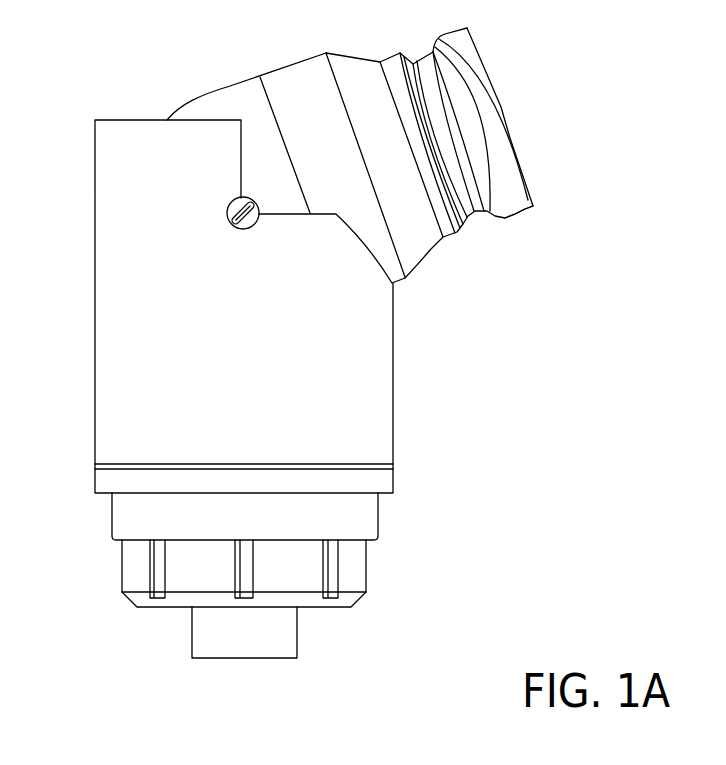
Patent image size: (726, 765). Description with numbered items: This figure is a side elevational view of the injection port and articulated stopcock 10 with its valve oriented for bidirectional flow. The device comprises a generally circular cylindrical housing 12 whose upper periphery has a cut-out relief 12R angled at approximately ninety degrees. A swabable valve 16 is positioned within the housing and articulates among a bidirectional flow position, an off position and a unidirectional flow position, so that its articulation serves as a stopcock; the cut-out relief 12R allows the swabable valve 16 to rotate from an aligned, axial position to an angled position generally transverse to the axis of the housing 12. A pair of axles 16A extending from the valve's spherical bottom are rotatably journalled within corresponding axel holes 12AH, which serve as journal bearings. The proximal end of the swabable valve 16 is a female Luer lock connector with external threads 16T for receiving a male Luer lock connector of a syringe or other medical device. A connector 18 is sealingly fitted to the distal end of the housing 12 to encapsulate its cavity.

The injection port and articulated stopcock 10 is at (532, 109).
The housing 12 is at (397, 416).
The cut-out relief 12R is at (361, 257).
The axel holes 12AH is at (232, 196).
The axles 16A is at (233, 223).
The swabable valve 16 is at (420, 246).
The external threads 16T is at (525, 208).
The connector 18 is at (373, 573).